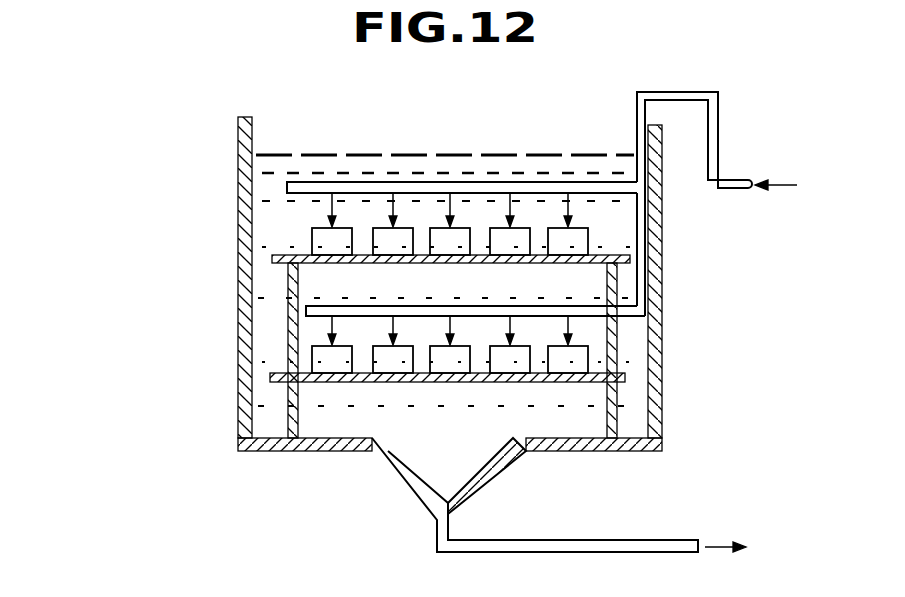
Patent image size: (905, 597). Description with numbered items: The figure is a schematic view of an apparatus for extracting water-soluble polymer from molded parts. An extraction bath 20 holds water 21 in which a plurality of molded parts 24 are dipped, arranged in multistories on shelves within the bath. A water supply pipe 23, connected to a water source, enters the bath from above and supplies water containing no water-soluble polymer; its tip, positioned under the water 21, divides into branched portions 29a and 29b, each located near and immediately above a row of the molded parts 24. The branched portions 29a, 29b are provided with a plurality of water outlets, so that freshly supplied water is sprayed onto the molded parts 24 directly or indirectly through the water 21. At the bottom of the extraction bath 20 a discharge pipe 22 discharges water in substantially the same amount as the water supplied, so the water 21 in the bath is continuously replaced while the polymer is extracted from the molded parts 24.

The extraction bath 20 is at (246, 215).
The water 21 is at (258, 172).
The discharge pipe 22 is at (526, 552).
The water supply pipe 23 is at (685, 92).
The molded parts 24 is at (320, 233).
The branched portion 29a is at (443, 188).
The branched portion 29b is at (327, 305).